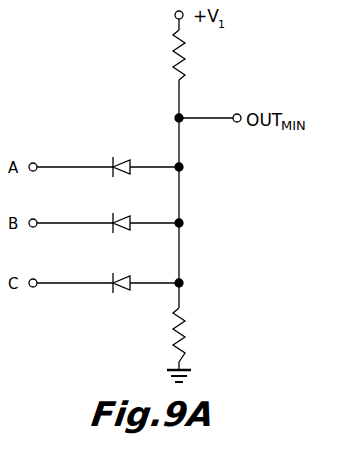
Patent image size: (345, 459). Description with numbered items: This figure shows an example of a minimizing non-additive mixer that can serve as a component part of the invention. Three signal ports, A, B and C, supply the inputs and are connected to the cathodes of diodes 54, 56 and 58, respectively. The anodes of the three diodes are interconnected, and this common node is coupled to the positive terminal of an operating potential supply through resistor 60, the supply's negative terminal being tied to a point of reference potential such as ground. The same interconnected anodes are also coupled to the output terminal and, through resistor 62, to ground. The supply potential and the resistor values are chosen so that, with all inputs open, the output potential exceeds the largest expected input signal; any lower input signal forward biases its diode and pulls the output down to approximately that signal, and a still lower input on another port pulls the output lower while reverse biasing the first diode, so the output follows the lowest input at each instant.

The diode 54 is at (127, 158).
The diode 56 is at (129, 215).
The diode 58 is at (127, 276).
The resistor 60 is at (187, 54).
The resistor 62 is at (191, 340).